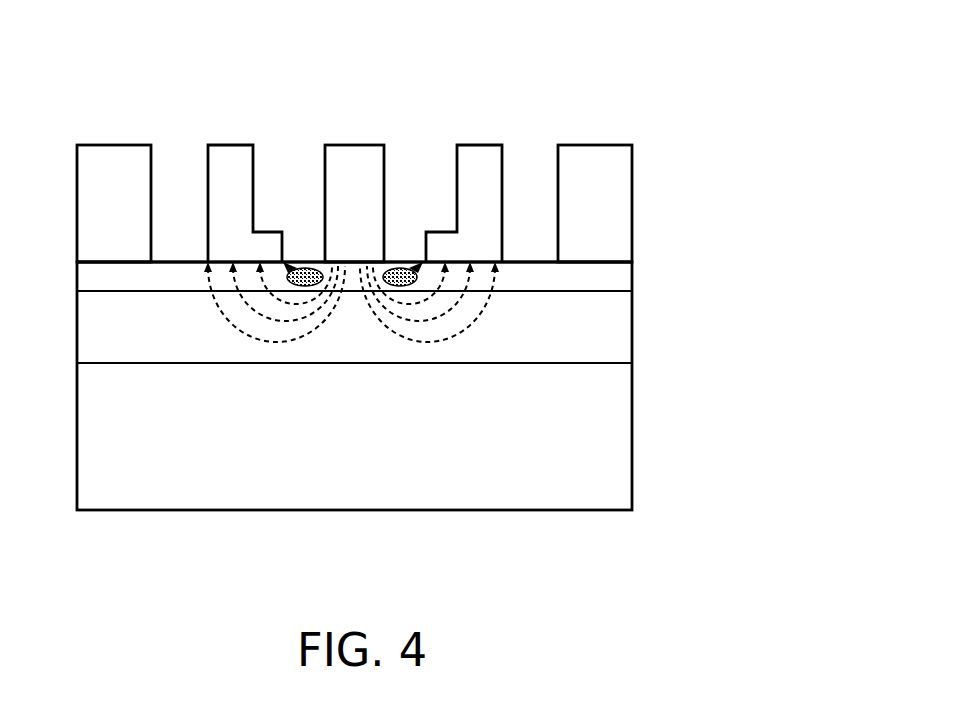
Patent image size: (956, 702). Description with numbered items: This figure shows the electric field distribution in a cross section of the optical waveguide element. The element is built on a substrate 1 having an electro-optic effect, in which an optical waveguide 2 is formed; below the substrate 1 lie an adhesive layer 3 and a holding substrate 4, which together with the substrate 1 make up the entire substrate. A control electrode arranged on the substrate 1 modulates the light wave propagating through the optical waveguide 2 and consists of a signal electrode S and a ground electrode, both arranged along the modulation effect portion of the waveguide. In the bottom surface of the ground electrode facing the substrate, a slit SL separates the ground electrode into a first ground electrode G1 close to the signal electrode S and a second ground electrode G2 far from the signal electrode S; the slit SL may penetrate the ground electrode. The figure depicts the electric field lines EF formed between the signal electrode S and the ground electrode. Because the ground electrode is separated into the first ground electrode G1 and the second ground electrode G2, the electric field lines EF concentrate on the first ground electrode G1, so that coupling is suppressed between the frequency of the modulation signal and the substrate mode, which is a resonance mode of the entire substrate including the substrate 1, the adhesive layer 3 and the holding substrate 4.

The substrate 1 is at (608, 285).
The optical waveguide 2 is at (298, 262).
The adhesive layer 3 is at (608, 345).
The holding substrate 4 is at (608, 450).
The signal electrode S is at (347, 167).
The first ground electrode G1 is at (474, 197).
The second ground electrode G2 is at (578, 197).
The electric field lines EF is at (295, 347).
The slit SL is at (530, 242).